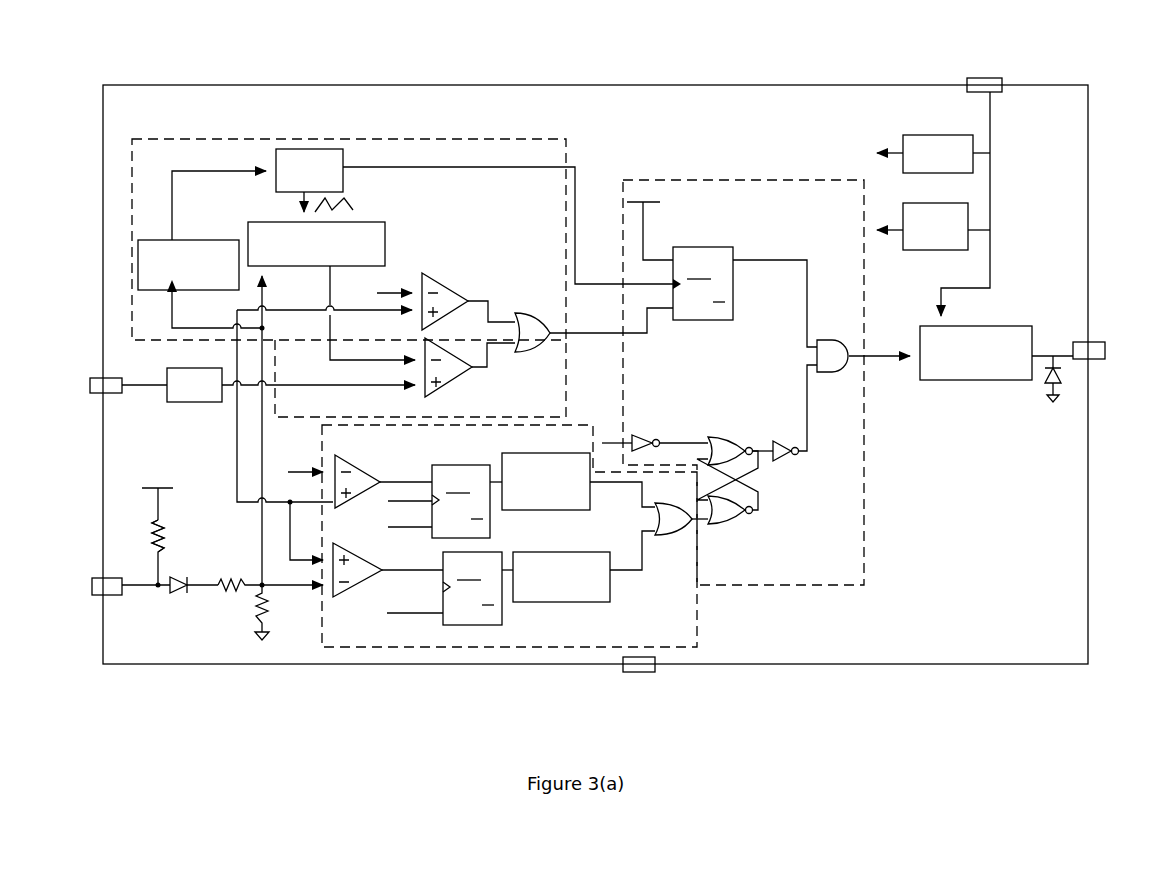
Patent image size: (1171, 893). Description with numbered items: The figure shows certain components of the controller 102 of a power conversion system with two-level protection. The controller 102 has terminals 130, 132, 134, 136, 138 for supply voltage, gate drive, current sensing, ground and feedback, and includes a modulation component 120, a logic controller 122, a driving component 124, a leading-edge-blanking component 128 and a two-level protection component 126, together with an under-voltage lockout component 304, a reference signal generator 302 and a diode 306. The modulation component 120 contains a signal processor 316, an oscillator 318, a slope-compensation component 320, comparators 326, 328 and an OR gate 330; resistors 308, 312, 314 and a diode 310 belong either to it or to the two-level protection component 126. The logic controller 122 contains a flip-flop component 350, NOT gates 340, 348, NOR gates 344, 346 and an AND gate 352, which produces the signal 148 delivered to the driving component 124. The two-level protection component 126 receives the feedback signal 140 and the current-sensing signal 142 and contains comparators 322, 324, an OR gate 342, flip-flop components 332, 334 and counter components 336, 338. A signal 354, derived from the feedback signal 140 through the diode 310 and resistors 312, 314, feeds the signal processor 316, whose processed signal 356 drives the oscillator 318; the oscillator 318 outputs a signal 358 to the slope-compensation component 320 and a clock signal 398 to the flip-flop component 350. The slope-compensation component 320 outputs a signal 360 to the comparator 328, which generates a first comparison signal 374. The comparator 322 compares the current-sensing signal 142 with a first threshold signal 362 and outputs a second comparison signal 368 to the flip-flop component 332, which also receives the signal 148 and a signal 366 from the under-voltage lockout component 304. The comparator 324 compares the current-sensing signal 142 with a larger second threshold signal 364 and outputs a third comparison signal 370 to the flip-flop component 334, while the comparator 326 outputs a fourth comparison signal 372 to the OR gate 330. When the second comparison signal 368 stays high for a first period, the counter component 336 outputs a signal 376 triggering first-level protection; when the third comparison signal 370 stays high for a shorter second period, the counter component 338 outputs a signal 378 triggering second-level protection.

The controller 102 is at (876, 664).
The modulation component 120 is at (566, 139).
The logic controller 122 is at (864, 553).
The driving component 124 is at (955, 380).
The two-level protection component 126 is at (697, 630).
The leading-edge-blanking component 128 is at (192, 402).
The terminal 130 is at (1000, 80).
The terminal 132 is at (1095, 342).
The terminal 134 is at (100, 378).
The terminal 136 is at (652, 672).
The terminal 138 is at (104, 595).
The feedback signal 140 is at (148, 586).
The current-sensing signal 142 is at (333, 386).
The signal 148 is at (395, 502).
The reference signal generator 302 is at (930, 203).
The under-voltage lockout component 304 is at (928, 135).
The diode 306 is at (1045, 388).
The resistor 308 is at (164, 522).
The diode 310 is at (164, 552).
The resistor 312 is at (232, 592).
The resistor 314 is at (258, 618).
The signal processor 316 is at (197, 240).
The oscillator 318 is at (343, 182).
The slope-compensation component 320 is at (385, 236).
The comparator 322 is at (355, 458).
The comparator 324 is at (350, 597).
The comparator 326 is at (454, 268).
The comparator 328 is at (450, 390).
The OR gate 330 is at (540, 350).
The flip-flop component 332 is at (455, 465).
The flip-flop component 334 is at (500, 620).
The counter component 336 is at (540, 453).
The counter component 338 is at (583, 602).
The NOT gate 340 is at (640, 435).
The OR gate 342 is at (692, 524).
The NOR gate 344 is at (715, 437).
The NOR gate 346 is at (757, 530).
The NOT gate 348 is at (790, 458).
The flip-flop component 350 is at (710, 247).
The AND gate 352 is at (825, 340).
The signal 354 is at (262, 528).
The processed signal 356 is at (225, 171).
The signal 358 is at (300, 207).
The signal 360 is at (330, 355).
The first threshold signal 362 is at (305, 473).
The second threshold signal 364 is at (392, 290).
The signal 366 is at (412, 527).
The second comparison signal 368 is at (388, 482).
The third comparison signal 370 is at (386, 570).
The fourth comparison signal 372 is at (486, 285).
The first comparison signal 374 is at (487, 360).
The signal 376 is at (642, 490).
The signal 378 is at (642, 556).
The signal 398 is at (515, 167).